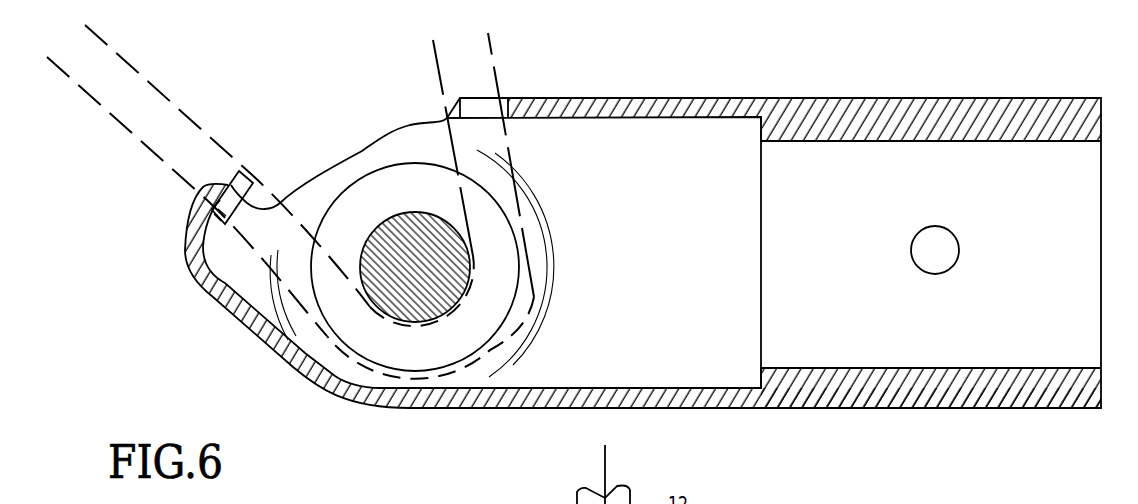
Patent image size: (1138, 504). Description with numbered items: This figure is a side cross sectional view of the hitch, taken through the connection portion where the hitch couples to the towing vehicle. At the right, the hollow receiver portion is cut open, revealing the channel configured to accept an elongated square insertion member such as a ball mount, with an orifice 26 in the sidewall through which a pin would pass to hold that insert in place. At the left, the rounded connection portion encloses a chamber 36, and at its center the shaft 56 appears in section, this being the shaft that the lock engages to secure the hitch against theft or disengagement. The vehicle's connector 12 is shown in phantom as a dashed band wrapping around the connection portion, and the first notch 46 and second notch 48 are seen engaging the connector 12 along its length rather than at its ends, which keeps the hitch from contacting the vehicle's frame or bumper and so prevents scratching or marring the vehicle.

The connector 12 is at (172, 117).
The orifices 26 is at (947, 243).
The chamber 36 is at (310, 340).
The first notch 46 is at (510, 98).
The second notch 48 is at (228, 185).
The shaft 56 is at (439, 268).